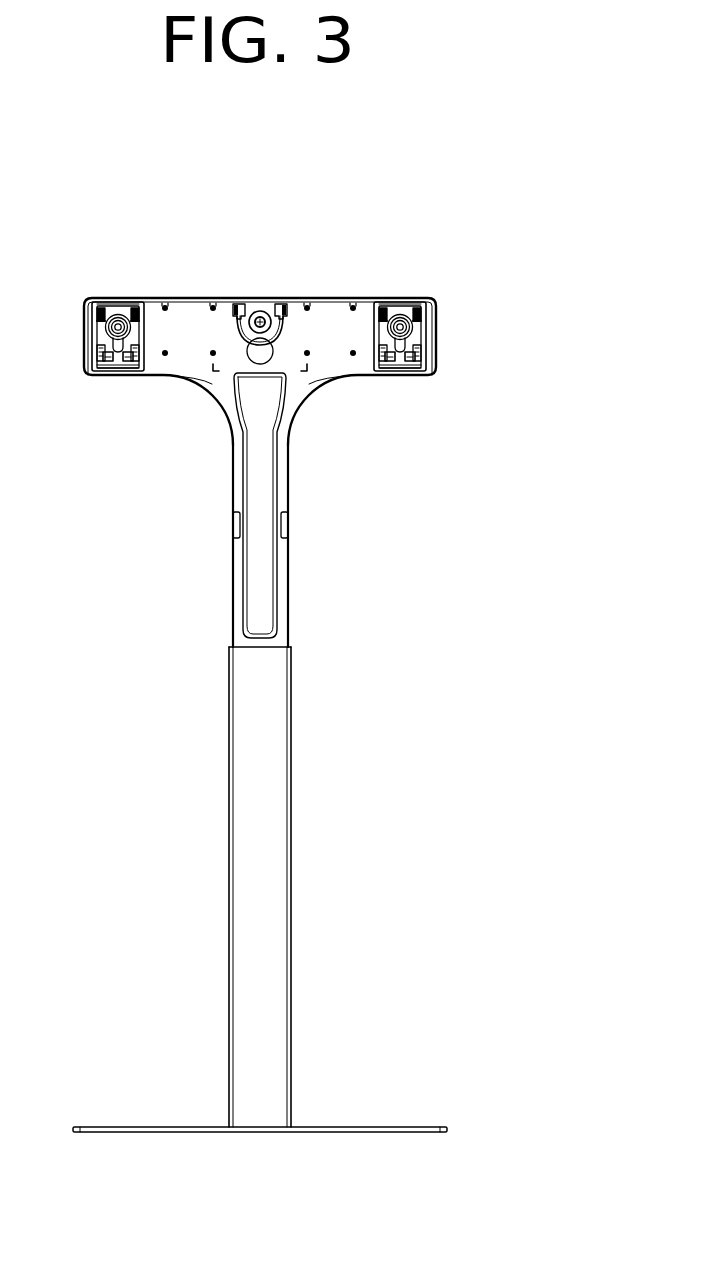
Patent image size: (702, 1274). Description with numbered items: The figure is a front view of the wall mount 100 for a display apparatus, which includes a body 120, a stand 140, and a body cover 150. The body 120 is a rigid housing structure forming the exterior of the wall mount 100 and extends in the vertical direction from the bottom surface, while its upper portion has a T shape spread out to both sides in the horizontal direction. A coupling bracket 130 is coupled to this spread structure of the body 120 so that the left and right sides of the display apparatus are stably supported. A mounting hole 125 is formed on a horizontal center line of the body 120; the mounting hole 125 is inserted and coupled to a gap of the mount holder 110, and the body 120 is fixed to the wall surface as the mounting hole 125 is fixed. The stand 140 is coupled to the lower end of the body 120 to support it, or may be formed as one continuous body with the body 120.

The wall mount 100 is at (280, 193).
The mount holder 110 is at (263, 306).
The body 120 is at (456, 327).
The mounting hole 125 is at (256, 352).
The coupling bracket 130 is at (120, 308).
The stand 140 is at (431, 1116).
The body cover 150 is at (298, 858).